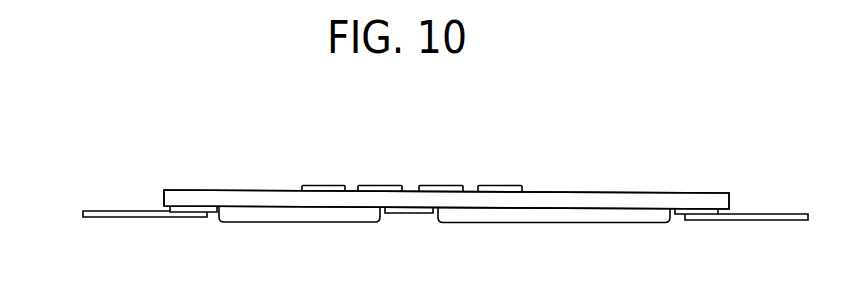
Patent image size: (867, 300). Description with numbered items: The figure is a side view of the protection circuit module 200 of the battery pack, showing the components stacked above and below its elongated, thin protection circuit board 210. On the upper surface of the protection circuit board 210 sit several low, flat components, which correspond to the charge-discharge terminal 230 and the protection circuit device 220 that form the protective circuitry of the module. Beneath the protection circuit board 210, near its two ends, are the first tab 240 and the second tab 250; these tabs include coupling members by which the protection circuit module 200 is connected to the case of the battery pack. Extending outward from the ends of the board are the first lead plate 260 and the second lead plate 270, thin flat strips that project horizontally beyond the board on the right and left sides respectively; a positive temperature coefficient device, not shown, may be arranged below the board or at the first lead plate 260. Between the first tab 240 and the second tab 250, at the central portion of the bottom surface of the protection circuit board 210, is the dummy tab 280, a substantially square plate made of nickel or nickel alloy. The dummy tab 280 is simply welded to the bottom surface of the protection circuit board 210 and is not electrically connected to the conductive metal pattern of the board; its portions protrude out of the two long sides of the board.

The protection circuit module 200 is at (63, 154).
The protection circuit board 210 is at (598, 200).
The protection circuit device 220 is at (316, 223).
The charge-discharge terminal 230 is at (495, 186).
The first tab 240 is at (680, 216).
The second tab 250 is at (187, 213).
The first lead plate 260 is at (743, 221).
The second lead plate 270 is at (124, 218).
The dummy tab 280 is at (410, 214).